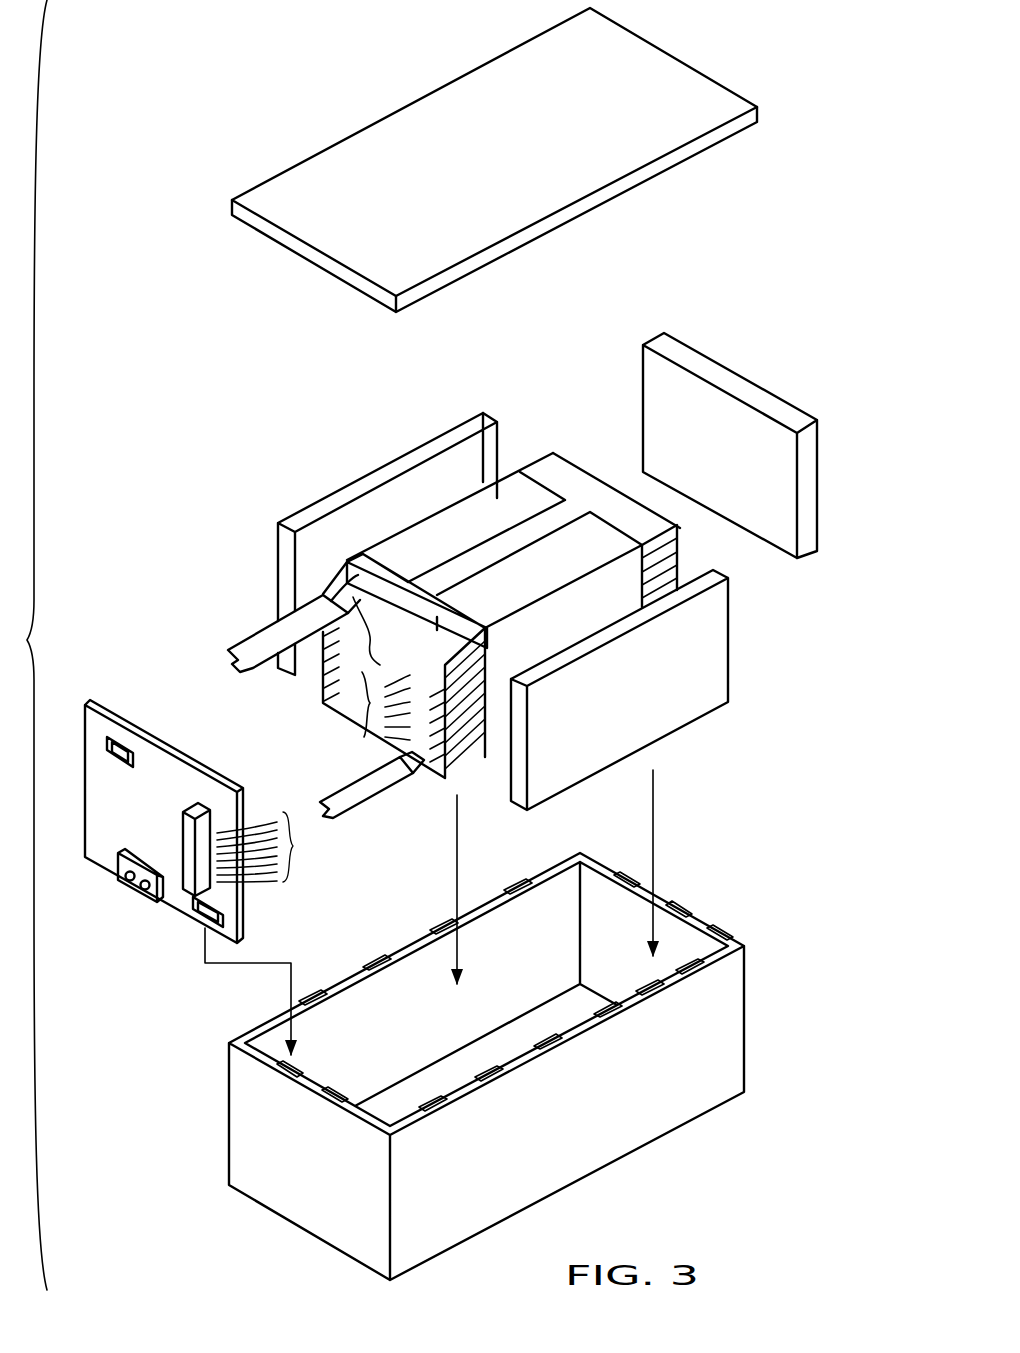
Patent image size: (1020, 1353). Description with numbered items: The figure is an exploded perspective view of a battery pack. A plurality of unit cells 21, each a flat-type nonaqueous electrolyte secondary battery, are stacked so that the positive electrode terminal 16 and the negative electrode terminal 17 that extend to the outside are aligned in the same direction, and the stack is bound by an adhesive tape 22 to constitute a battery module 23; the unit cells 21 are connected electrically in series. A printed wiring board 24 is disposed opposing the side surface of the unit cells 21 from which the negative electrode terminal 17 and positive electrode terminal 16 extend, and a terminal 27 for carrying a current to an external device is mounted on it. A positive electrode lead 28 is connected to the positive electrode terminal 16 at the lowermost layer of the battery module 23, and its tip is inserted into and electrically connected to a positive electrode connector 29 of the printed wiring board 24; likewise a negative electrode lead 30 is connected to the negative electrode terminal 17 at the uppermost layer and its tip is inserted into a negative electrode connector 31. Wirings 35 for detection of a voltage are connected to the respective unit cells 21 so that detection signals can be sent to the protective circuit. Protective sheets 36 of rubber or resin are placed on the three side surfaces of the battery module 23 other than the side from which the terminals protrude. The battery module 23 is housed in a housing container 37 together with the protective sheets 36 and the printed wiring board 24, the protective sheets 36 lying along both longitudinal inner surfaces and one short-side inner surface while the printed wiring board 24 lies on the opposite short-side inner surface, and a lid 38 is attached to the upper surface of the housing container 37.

The positive electrode terminal 16 is at (440, 623).
The negative electrode terminal 17 is at (330, 585).
The unit cells 21 is at (678, 535).
The adhesive tape 22 is at (579, 545).
The battery module 23 is at (433, 508).
The printed wiring board 24 is at (121, 708).
The terminal for carrying a current to an external device 27 is at (147, 897).
The positive electrode lead 28 is at (370, 808).
The positive electrode connector 29 is at (225, 920).
The negative electrode lead 30 is at (245, 638).
The negative electrode connector 31 is at (128, 750).
The wirings for detection of a voltage 35 is at (360, 703).
The protective sheets 36 is at (352, 493).
The housing container 37 is at (729, 1027).
The lid 38 is at (695, 90).